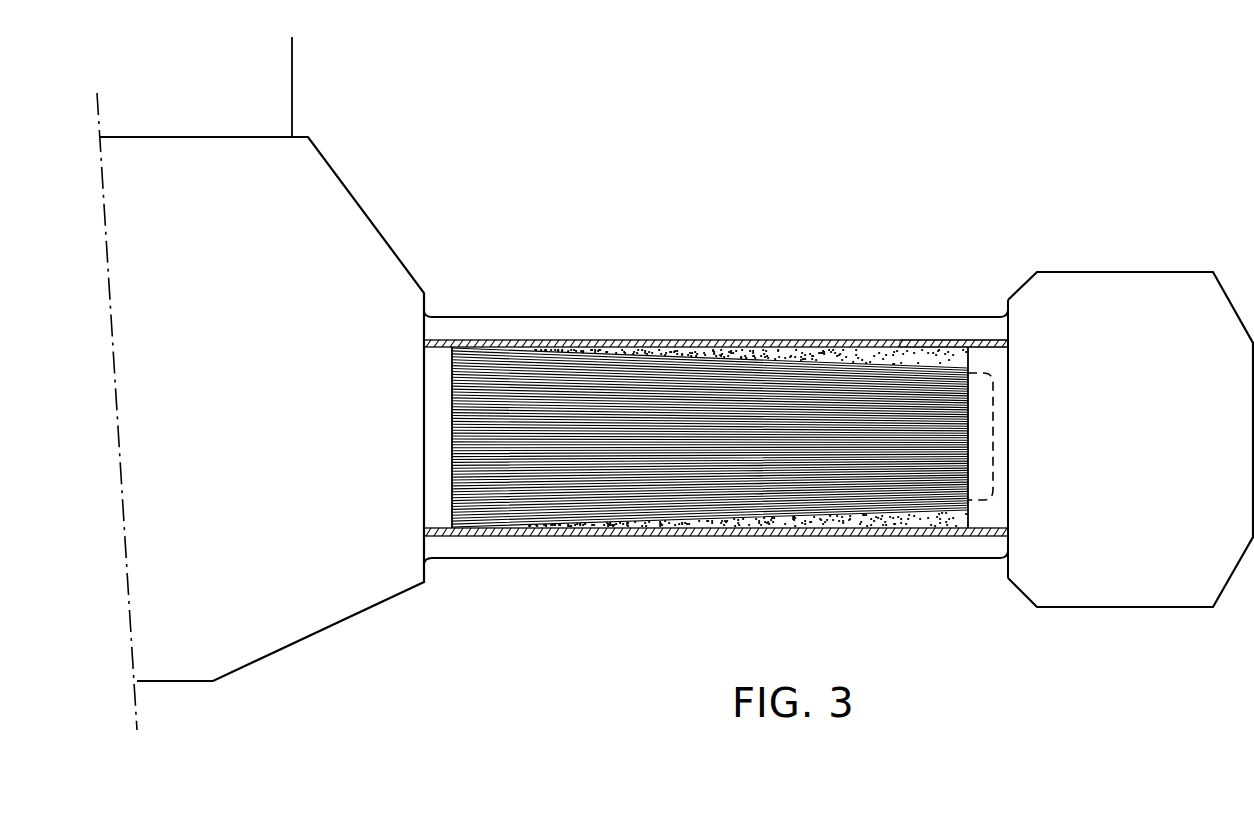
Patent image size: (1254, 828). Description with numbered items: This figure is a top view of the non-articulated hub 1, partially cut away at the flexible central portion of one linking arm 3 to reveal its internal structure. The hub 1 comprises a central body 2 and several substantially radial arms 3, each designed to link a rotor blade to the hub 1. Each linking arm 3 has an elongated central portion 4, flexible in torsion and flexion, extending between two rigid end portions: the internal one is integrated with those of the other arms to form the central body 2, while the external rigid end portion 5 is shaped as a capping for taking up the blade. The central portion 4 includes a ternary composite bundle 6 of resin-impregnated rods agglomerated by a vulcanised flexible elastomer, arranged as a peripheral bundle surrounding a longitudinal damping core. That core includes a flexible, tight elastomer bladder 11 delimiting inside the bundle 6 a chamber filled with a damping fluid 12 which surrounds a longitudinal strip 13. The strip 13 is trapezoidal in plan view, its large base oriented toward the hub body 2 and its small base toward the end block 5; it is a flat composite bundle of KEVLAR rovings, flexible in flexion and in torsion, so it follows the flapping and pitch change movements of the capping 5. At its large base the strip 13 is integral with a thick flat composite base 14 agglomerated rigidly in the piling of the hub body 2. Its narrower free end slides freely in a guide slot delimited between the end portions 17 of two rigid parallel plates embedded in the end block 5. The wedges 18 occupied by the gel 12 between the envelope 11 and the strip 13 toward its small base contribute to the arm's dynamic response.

The non-articulated hub 1 is at (465, 230).
The central body 2 is at (357, 247).
The linking arm 3 is at (294, 88).
The elongated central portion 4 is at (735, 560).
The rigid end portion 5 is at (1117, 285).
The ternary composite bundle 6 is at (772, 330).
The bladder 11 is at (535, 345).
The damping fluid 12 is at (912, 353).
The longitudinal strip 13 is at (687, 488).
The flat base 14 is at (437, 368).
The end portions 17 is at (990, 520).
The wedges 18 is at (822, 352).